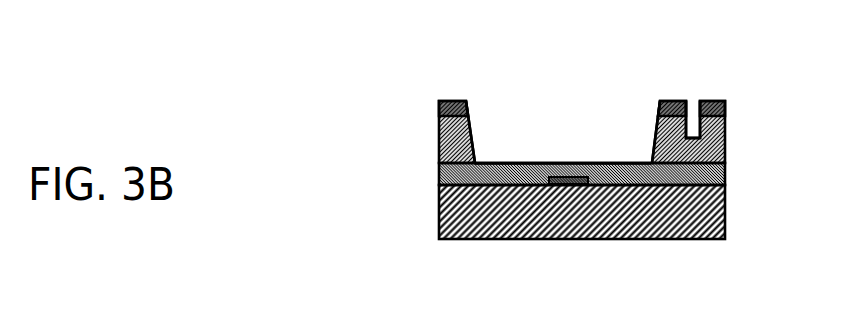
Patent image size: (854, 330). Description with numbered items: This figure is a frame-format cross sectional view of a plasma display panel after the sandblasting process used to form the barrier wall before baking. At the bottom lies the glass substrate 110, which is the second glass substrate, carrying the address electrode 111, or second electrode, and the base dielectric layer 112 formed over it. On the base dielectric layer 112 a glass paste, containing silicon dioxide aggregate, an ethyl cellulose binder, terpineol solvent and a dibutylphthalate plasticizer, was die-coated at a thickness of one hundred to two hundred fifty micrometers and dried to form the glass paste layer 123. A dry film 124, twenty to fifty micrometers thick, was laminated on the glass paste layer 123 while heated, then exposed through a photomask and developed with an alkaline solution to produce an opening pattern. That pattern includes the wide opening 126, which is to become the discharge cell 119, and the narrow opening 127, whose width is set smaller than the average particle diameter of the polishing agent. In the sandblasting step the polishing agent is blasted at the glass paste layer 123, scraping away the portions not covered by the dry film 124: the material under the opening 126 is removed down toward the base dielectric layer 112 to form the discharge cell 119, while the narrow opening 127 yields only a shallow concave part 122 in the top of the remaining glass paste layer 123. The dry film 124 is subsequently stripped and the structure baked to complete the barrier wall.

The glass substrate 110 is at (698, 228).
The address electrode 111 is at (568, 183).
The base dielectric layer 112 is at (438, 182).
The discharge cell 119 is at (503, 156).
The concave part 122 is at (692, 128).
The glass paste layer 123 is at (725, 127).
The dry film 124 is at (717, 102).
The opening 126 is at (540, 138).
The opening 127 is at (693, 102).